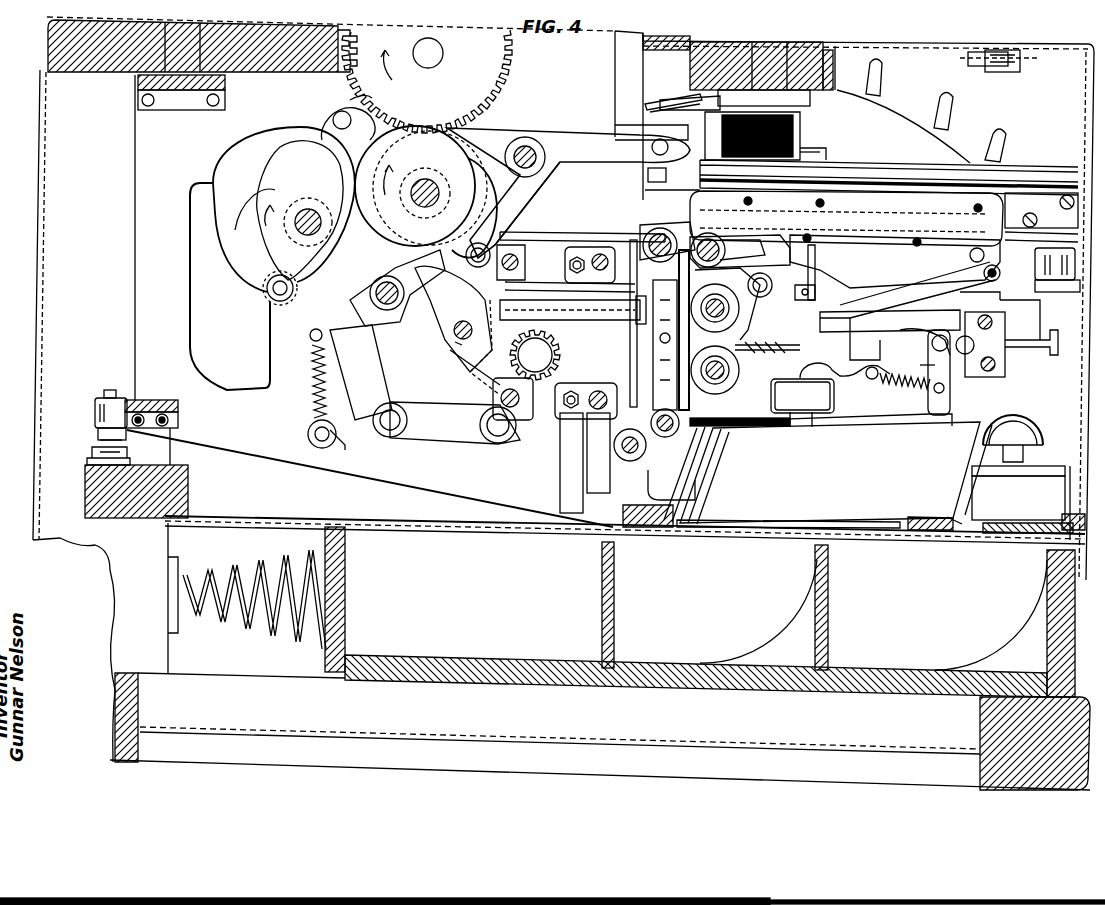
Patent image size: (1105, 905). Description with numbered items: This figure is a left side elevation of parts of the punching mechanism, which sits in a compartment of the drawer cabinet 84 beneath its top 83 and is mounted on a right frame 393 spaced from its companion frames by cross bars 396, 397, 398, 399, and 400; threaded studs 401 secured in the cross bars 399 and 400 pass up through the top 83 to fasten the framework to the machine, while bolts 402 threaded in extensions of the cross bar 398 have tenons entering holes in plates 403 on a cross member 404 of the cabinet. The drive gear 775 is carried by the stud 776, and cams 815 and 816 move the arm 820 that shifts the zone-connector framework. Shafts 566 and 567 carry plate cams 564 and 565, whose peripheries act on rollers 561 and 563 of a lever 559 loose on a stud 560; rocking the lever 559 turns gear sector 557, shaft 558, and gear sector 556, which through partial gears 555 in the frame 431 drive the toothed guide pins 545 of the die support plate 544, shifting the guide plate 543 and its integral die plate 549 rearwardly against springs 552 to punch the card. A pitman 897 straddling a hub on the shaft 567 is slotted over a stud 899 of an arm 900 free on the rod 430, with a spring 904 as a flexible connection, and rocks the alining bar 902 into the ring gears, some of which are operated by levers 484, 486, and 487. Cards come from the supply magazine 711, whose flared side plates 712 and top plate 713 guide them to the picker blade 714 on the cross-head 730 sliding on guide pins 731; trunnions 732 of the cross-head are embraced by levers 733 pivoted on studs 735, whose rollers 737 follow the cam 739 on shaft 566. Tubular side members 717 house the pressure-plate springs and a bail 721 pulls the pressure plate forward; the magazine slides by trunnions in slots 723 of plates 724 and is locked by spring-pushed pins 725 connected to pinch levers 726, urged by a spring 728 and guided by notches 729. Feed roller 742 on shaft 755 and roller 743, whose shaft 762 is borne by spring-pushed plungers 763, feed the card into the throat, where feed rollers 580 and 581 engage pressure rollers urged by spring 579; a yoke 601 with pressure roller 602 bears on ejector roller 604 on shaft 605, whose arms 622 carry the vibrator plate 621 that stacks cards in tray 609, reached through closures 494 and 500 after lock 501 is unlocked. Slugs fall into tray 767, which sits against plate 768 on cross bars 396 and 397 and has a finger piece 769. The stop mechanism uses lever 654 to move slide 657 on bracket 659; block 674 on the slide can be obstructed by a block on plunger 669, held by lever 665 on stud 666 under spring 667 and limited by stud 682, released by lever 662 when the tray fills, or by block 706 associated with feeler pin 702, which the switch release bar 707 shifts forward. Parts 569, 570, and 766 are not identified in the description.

The top frame bar 83 is at (48, 50).
The side wall 84 is at (40, 127).
The bracket 401 is at (138, 80).
The plate 399 is at (140, 98).
The frame plate 393 is at (135, 228).
The switch 402 is at (108, 396).
The block 398 is at (172, 408).
The nut 403 is at (90, 450).
The base block 404 is at (88, 495).
The cam plate 815 is at (233, 170).
The cam 561 is at (340, 172).
The cam shaft 567 is at (305, 210).
The cam follower 565 is at (268, 255).
The pivot 563 is at (266, 295).
The link 816 is at (320, 125).
The pivot pin 775 is at (345, 104).
The pin 776 is at (414, 45).
The gear 820 is at (390, 112).
The cam wheel 566 is at (438, 180).
The lever 739 is at (470, 137).
The roller 735 is at (518, 175).
The lever arm 733 is at (533, 200).
The pivot 737 is at (470, 248).
The pin 732 is at (655, 147).
The arm 730 is at (652, 133).
The block 731 is at (655, 175).
The pawl 713 is at (650, 98).
The spring 714 is at (682, 95).
The bar 431 is at (541, 233).
The bracket 763 is at (590, 245).
The lever 564 is at (395, 262).
The pivot 560 is at (370, 291).
The arm 902 is at (365, 315).
The pin 897 is at (308, 320).
The spring 904 is at (307, 340).
The pivot 899 is at (310, 432).
The link 900 is at (345, 445).
The shaft 430 is at (390, 440).
The lever 557 is at (470, 415).
The lever 559 is at (440, 282).
The ratchet 545 is at (500, 313).
The pin 555 is at (470, 332).
The pivot 558 is at (462, 350).
The block 556 is at (492, 398).
The shaft 543 is at (580, 330).
The bracket 544 is at (575, 387).
The bar 579 is at (622, 284).
The bar 552 is at (620, 300).
The slide 549 is at (658, 280).
The plate 570 is at (592, 446).
The bracket 569 is at (640, 460).
The roller 604 is at (640, 455).
The guide 400 is at (815, 105).
The key 484 is at (880, 75).
The key 486 is at (955, 108).
The key 487 is at (1005, 142).
The stop 494 is at (920, 50).
The block 501 is at (998, 72).
The frame wall 500 is at (1088, 150).
The rail 712 is at (700, 160).
The link 721 is at (830, 150).
The rail 717 is at (880, 172).
The plate 711 is at (915, 193).
The plate edge 723 is at (738, 205).
The pivot 762 is at (662, 232).
The pivot 743 is at (708, 240).
The lever 755 is at (745, 240).
The lever 742 is at (760, 240).
The roller 724 is at (740, 300).
The lever 580 is at (732, 280).
The bracket 654 is at (825, 260).
The plate 725 is at (966, 250).
The block 657 is at (822, 285).
The lever 728 is at (880, 276).
The pivot 729 is at (990, 272).
The block 726 is at (1060, 262).
The bracket 659 is at (988, 312).
The screw 702 is at (745, 350).
The roller 581 is at (740, 372).
The bar 669 is at (872, 312).
The lever 682 is at (912, 322).
The block 666 is at (988, 340).
The rod 707 is at (1040, 338).
The block 674 is at (802, 396).
The link 706 is at (835, 376).
The spring 665 is at (902, 380).
The lever 667 is at (925, 400).
The plate 601 is at (718, 420).
The edge 602 is at (712, 435).
The edge 605 is at (708, 452).
The edge 622 is at (700, 472).
The edge 621 is at (692, 490).
The edge 767 is at (860, 432).
The support 766 is at (818, 425).
The arm 662 is at (935, 414).
The dome 769 is at (1020, 418).
The block 609 is at (1012, 535).
The plate 397 is at (660, 536).
The plate 768 is at (690, 534).
The plate 396 is at (905, 536).